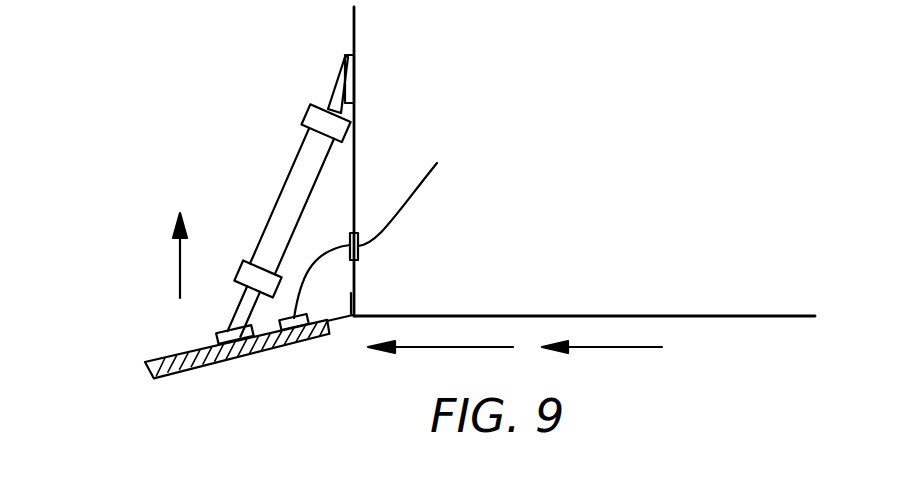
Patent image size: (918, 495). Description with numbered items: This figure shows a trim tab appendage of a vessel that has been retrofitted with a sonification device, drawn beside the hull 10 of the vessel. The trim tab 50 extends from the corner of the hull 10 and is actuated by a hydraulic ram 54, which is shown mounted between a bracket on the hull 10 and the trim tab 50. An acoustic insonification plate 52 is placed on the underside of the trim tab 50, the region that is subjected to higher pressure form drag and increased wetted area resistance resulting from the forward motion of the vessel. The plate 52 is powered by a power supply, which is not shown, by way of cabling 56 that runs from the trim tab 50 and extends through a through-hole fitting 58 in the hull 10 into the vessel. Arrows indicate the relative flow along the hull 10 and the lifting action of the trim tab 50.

The hull 10 is at (583, 170).
The plate 50 is at (190, 357).
The acoustic insonification plate 52 is at (250, 355).
The hydraulic ram 54 is at (281, 191).
The cabling 56 is at (321, 256).
The through-hole fitting 58 is at (364, 238).